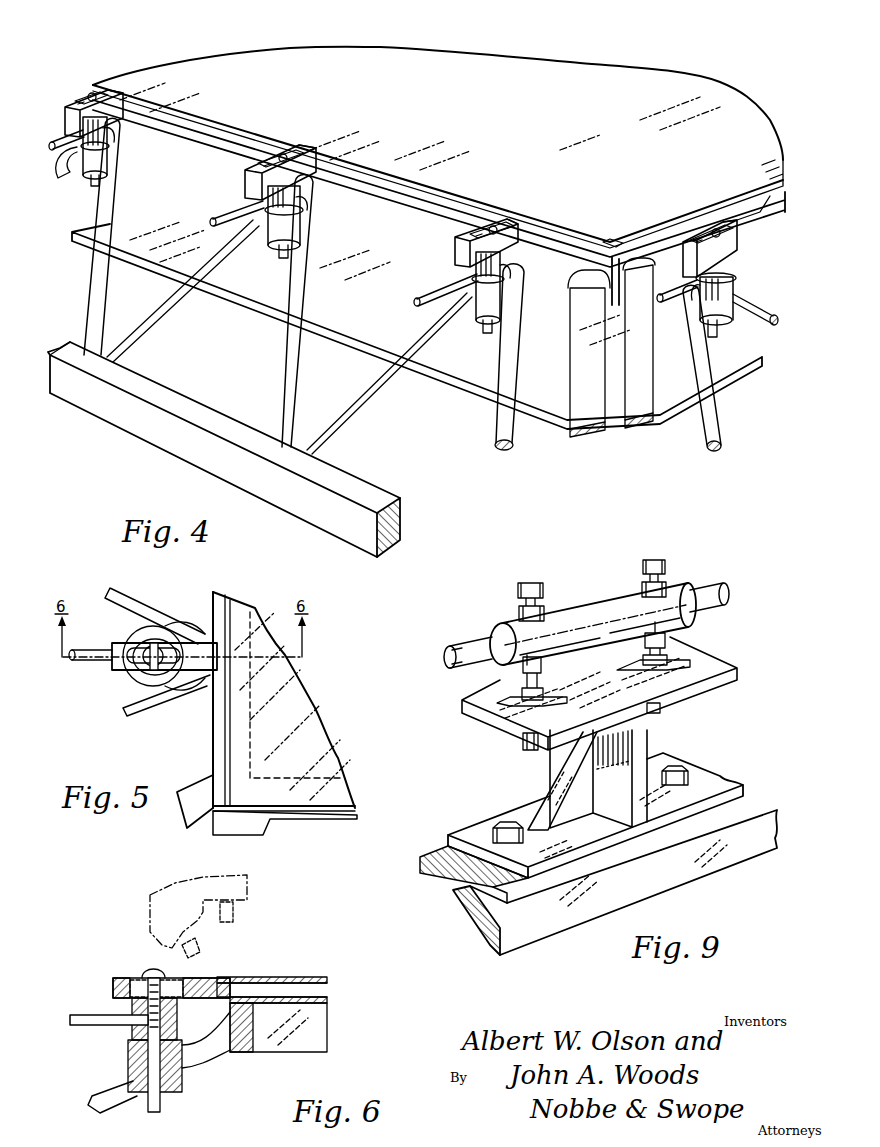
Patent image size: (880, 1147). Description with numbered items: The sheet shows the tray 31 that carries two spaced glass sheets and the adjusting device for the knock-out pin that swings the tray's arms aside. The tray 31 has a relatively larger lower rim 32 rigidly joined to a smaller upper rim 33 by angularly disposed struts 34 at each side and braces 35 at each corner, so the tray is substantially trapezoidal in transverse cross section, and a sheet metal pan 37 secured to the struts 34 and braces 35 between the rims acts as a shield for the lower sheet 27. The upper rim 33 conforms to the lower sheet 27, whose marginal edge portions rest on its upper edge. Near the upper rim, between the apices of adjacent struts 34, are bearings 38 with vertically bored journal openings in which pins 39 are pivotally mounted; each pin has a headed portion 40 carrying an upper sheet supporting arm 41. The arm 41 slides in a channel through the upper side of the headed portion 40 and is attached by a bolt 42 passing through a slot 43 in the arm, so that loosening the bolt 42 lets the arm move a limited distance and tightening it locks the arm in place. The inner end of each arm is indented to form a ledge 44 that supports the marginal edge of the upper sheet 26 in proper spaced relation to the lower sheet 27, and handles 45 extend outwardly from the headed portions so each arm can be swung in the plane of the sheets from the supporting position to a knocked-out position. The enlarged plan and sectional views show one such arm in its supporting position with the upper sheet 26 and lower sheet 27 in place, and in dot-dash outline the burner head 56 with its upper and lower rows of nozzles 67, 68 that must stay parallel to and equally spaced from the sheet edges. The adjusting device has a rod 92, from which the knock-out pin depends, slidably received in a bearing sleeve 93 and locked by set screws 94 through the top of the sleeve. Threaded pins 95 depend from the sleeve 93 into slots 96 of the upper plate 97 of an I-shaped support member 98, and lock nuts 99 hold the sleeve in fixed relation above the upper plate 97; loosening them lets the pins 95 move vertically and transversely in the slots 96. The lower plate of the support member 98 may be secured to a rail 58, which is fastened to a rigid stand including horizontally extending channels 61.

In FIG. 4, the upper sheet 26 is at (545, 97).
In FIG. 5, the upper sheet 26 is at (297, 717).
In FIG. 6, the upper sheet 26 is at (284, 977).
In FIG. 4, the lower sheet 27 is at (402, 264).
In FIG. 5, the lower sheet 27 is at (332, 812).
In FIG. 6, the lower sheet 27 is at (313, 997).
In FIG. 4, the tray 31 is at (155, 424).
In FIG. 6, the tray 31 is at (246, 1052).
In FIG. 4, the lower rim 32 is at (318, 480).
In FIG. 4, the upper rim 33 is at (386, 204).
In FIG. 5, the upper rim 33 is at (345, 768).
In FIG. 6, the upper rim 33 is at (292, 1026).
In FIG. 4, the struts 34 is at (98, 292).
In FIG. 5, the struts 34 is at (128, 607).
In FIG. 6, the struts 34 is at (110, 1098).
In FIG. 4, the braces 35 is at (632, 422).
In FIG. 5, the braces 35 is at (197, 783).
In FIG. 4, the pan 37 is at (462, 365).
In FIG. 4, the bearings 38 is at (90, 160).
In FIG. 5, the bearings 38 is at (168, 690).
In FIG. 6, the bearings 38 is at (138, 1058).
In FIG. 4, the pins 39 is at (93, 180).
In FIG. 6, the pins 39 is at (162, 1102).
In FIG. 4, the headed portions 40 is at (118, 148).
In FIG. 5, the headed portions 40 is at (172, 682).
In FIG. 6, the headed portions 40 is at (133, 1008).
In FIG. 4, the upper sheet supporting arms 41 is at (78, 104).
In FIG. 5, the upper sheet supporting arms 41 is at (193, 645).
In FIG. 6, the upper sheet supporting arms 41 is at (112, 983).
In FIG. 4, the bolt 42 is at (92, 92).
In FIG. 5, the bolt 42 is at (132, 672).
In FIG. 6, the bolt 42 is at (149, 967).
In FIG. 4, the slot 43 is at (268, 163).
In FIG. 5, the slot 43 is at (128, 668).
In FIG. 6, the slot 43 is at (132, 980).
In FIG. 4, the ledge 44 is at (318, 160).
In FIG. 5, the ledge 44 is at (248, 616).
In FIG. 6, the ledge 44 is at (272, 971).
In FIG. 4, the handles 45 is at (62, 140).
In FIG. 5, the handles 45 is at (93, 650).
In FIG. 6, the handles 45 is at (87, 1026).
In FIG. 6, the burner head 56 is at (230, 890).
In FIG. 9, the rails 58 is at (735, 770).
In FIG. 9, the channels 61 is at (535, 917).
In FIG. 6, the upper row of nozzles 67 is at (234, 918).
In FIG. 6, the lower row of nozzles 68 is at (201, 947).
In FIG. 9, the rod 92 is at (700, 598).
In FIG. 9, the bearing sleeve 93 is at (578, 625).
In FIG. 9, the set screws 94 is at (535, 583).
In FIG. 9, the threaded pins 95 is at (522, 698).
In FIG. 9, the slots 96 is at (500, 698).
In FIG. 9, the upper plate 97 is at (470, 700).
In FIG. 9, the support member 98 is at (650, 748).
In FIG. 9, the lock nuts 99 is at (525, 718).